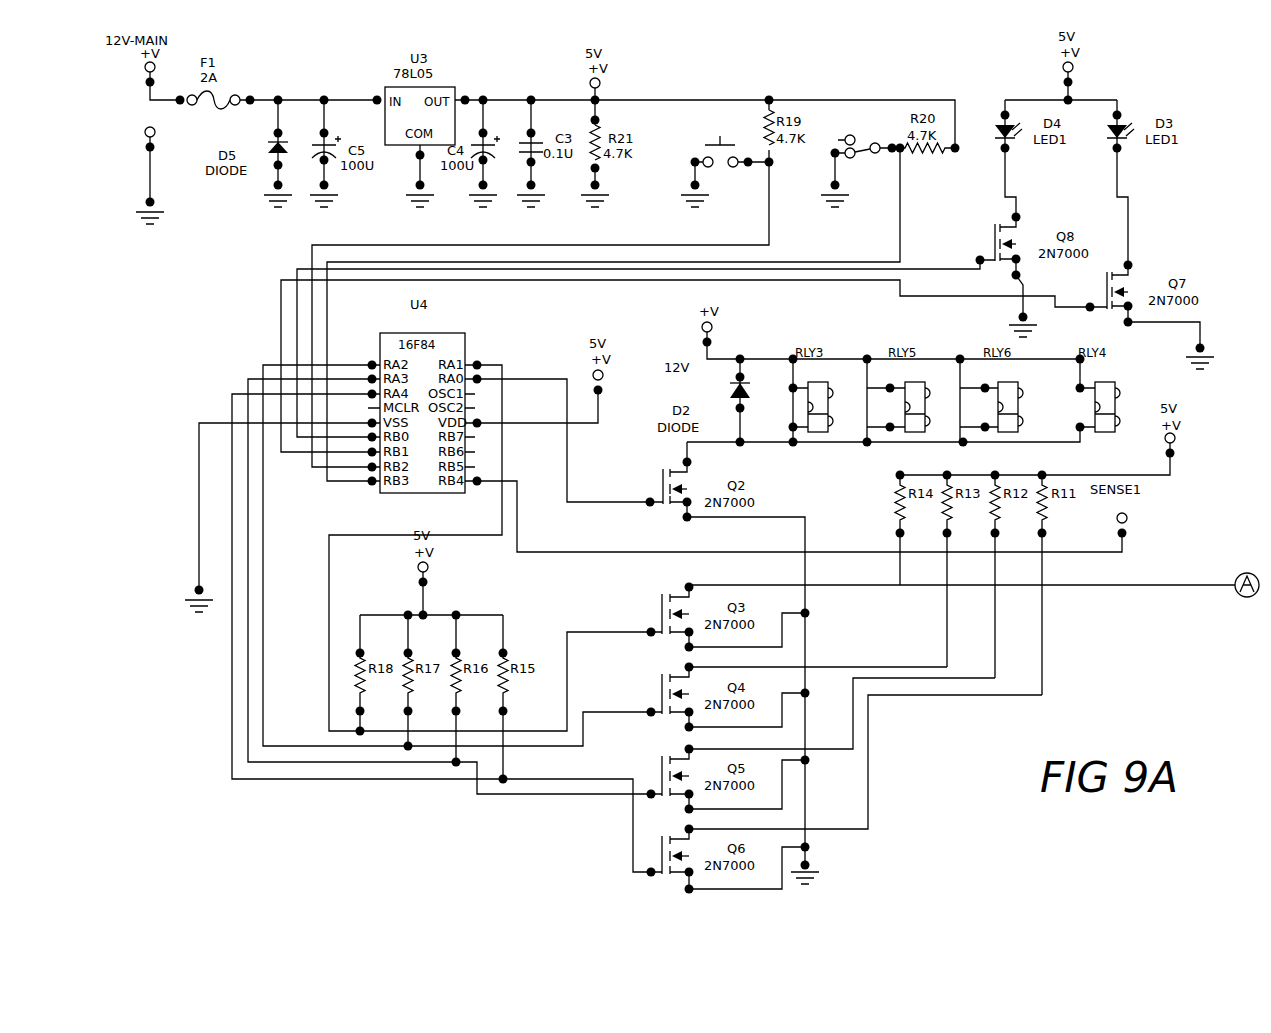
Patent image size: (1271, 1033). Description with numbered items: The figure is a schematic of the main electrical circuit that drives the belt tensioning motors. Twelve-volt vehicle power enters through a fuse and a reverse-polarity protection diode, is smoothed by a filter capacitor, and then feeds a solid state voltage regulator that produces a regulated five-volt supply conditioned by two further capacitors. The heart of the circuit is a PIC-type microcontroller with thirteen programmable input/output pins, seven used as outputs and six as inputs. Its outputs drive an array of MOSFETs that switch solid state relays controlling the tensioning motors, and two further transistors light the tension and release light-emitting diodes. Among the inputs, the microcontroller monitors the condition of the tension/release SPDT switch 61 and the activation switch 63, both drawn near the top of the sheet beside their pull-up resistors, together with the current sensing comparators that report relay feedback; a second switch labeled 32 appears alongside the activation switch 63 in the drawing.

The switch S2 32 is at (749, 78).
The tension/release SPDT switch 61 is at (873, 135).
The activation switch 63 is at (725, 134).